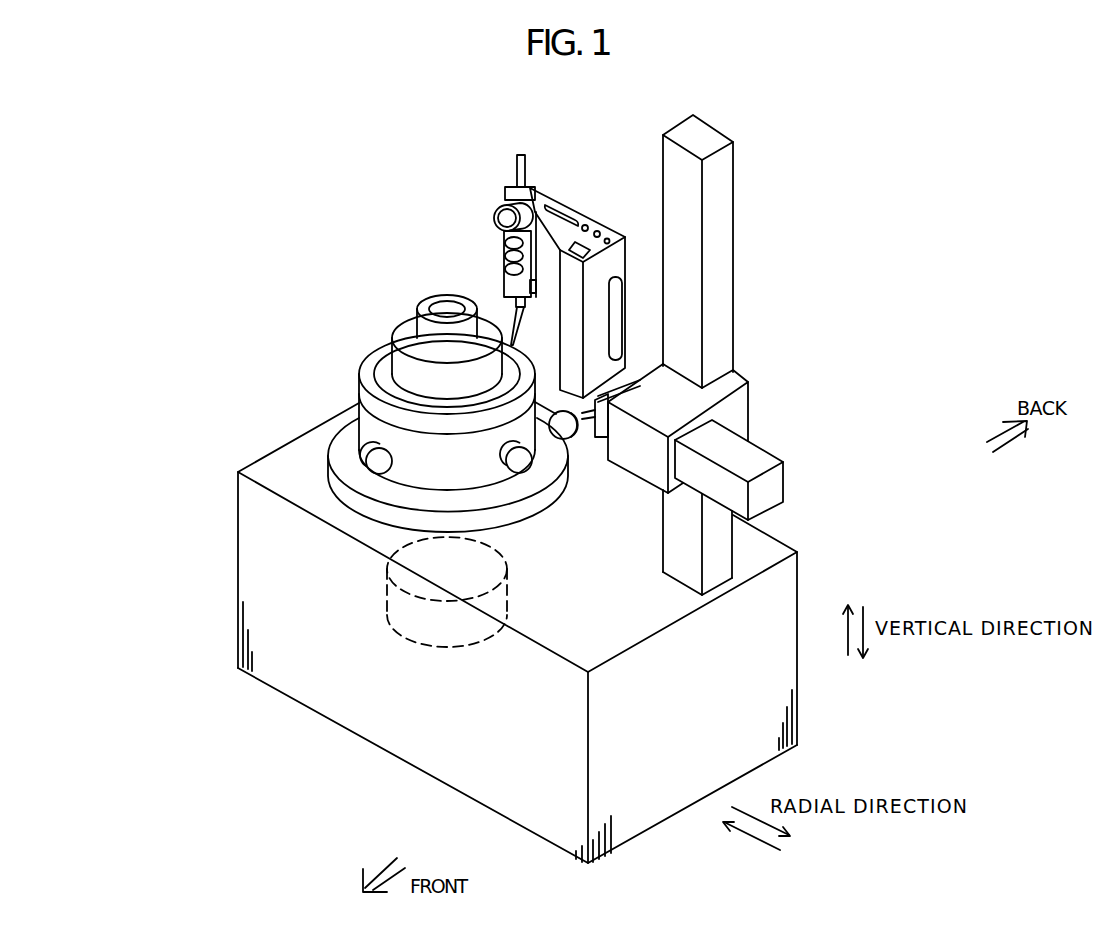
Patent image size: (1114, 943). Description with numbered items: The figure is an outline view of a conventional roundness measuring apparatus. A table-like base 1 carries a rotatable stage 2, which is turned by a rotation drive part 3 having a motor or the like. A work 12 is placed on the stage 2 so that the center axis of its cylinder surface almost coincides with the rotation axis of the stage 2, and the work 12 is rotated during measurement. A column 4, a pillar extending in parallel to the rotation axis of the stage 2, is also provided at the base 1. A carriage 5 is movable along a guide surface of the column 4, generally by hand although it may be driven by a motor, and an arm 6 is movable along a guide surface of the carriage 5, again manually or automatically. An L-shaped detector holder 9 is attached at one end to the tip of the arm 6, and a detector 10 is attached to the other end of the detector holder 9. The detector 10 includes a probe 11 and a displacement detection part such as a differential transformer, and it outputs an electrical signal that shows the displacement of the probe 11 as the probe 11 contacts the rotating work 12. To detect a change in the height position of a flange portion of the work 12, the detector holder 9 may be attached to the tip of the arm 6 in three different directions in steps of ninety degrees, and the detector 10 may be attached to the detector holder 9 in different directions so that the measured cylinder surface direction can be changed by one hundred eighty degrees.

The base 1 is at (233, 532).
The stage 2 is at (365, 360).
The rotation drive part 3 is at (412, 613).
The column 4 is at (723, 194).
The carriage 5 is at (752, 400).
The arm 6 is at (765, 450).
The detector holder 9 is at (582, 210).
The detector 10 is at (505, 257).
The probe 11 is at (504, 302).
The work 12 is at (407, 312).